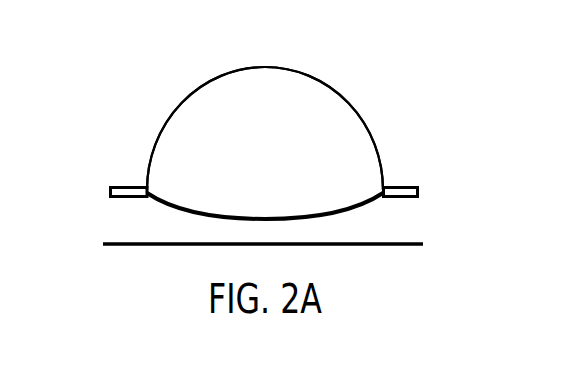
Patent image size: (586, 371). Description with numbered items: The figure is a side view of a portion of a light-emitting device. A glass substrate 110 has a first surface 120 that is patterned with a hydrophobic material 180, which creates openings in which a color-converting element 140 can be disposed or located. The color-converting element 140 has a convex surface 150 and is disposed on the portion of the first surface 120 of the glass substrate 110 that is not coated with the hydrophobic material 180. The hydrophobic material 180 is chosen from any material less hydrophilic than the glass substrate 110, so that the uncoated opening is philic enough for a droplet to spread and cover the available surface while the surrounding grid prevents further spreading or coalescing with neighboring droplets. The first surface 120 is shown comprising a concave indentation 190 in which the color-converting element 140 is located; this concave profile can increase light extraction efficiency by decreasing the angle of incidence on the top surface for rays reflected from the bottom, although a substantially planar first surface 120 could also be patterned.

The glass substrate 110 is at (402, 223).
The first surface 120 is at (122, 198).
The color-converting element 140 is at (284, 143).
The convex surface 150 is at (202, 85).
The hydrophobic material 180 is at (403, 188).
The concave indentation 190 is at (268, 215).